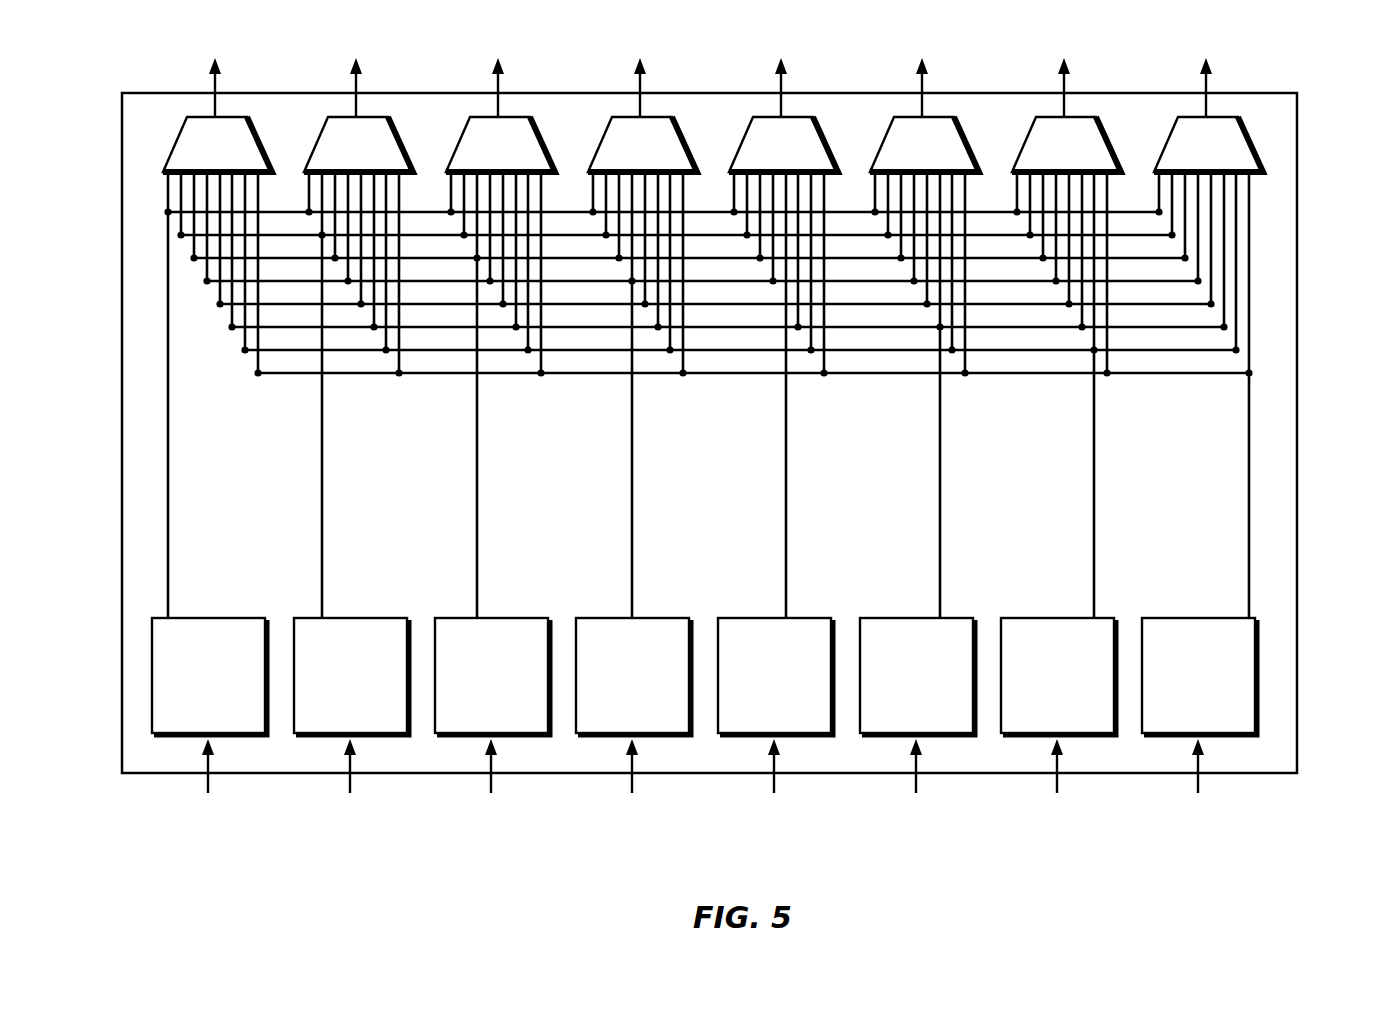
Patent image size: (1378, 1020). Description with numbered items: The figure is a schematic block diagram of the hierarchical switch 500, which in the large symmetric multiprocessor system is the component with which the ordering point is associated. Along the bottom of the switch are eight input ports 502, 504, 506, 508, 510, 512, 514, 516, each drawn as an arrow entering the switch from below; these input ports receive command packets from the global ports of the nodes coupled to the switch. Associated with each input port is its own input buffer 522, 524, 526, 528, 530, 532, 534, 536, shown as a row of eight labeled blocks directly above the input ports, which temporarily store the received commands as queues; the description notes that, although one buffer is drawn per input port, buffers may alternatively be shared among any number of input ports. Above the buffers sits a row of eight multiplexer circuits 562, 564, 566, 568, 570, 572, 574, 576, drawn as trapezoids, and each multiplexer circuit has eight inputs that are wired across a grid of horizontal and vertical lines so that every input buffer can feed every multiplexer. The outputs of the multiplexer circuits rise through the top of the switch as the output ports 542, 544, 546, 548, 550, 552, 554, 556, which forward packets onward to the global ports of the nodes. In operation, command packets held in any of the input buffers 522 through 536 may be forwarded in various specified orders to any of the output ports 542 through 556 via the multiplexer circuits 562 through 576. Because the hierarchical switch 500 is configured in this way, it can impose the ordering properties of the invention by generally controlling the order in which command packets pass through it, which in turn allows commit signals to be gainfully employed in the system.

The hierarchical switch 500 is at (1297, 127).
The input port 502 is at (208, 782).
The input buffer 522 is at (209, 676).
The output port 542 is at (214, 92).
The multiplexer circuit 562 is at (176, 142).
The input port 504 is at (350, 782).
The input buffer 524 is at (351, 676).
The output port 544 is at (355, 92).
The multiplexer circuit 564 is at (317, 142).
The input port 506 is at (491, 782).
The input buffer 526 is at (492, 676).
The output port 546 is at (497, 92).
The multiplexer circuit 566 is at (459, 142).
The input port 508 is at (632, 782).
The input buffer 528 is at (633, 676).
The output port 548 is at (639, 92).
The multiplexer circuit 568 is at (601, 142).
The input port 510 is at (774, 782).
The input buffer 530 is at (775, 676).
The output port 550 is at (780, 92).
The multiplexer circuit 570 is at (742, 142).
The input port 512 is at (916, 782).
The input buffer 532 is at (917, 676).
The output port 552 is at (921, 92).
The multiplexer circuit 572 is at (883, 142).
The input port 514 is at (1057, 782).
The input buffer 534 is at (1058, 676).
The output port 554 is at (1063, 92).
The multiplexer circuit 574 is at (1025, 142).
The input port 516 is at (1198, 782).
The input buffer 536 is at (1199, 676).
The output port 556 is at (1205, 92).
The multiplexer circuit 576 is at (1167, 142).